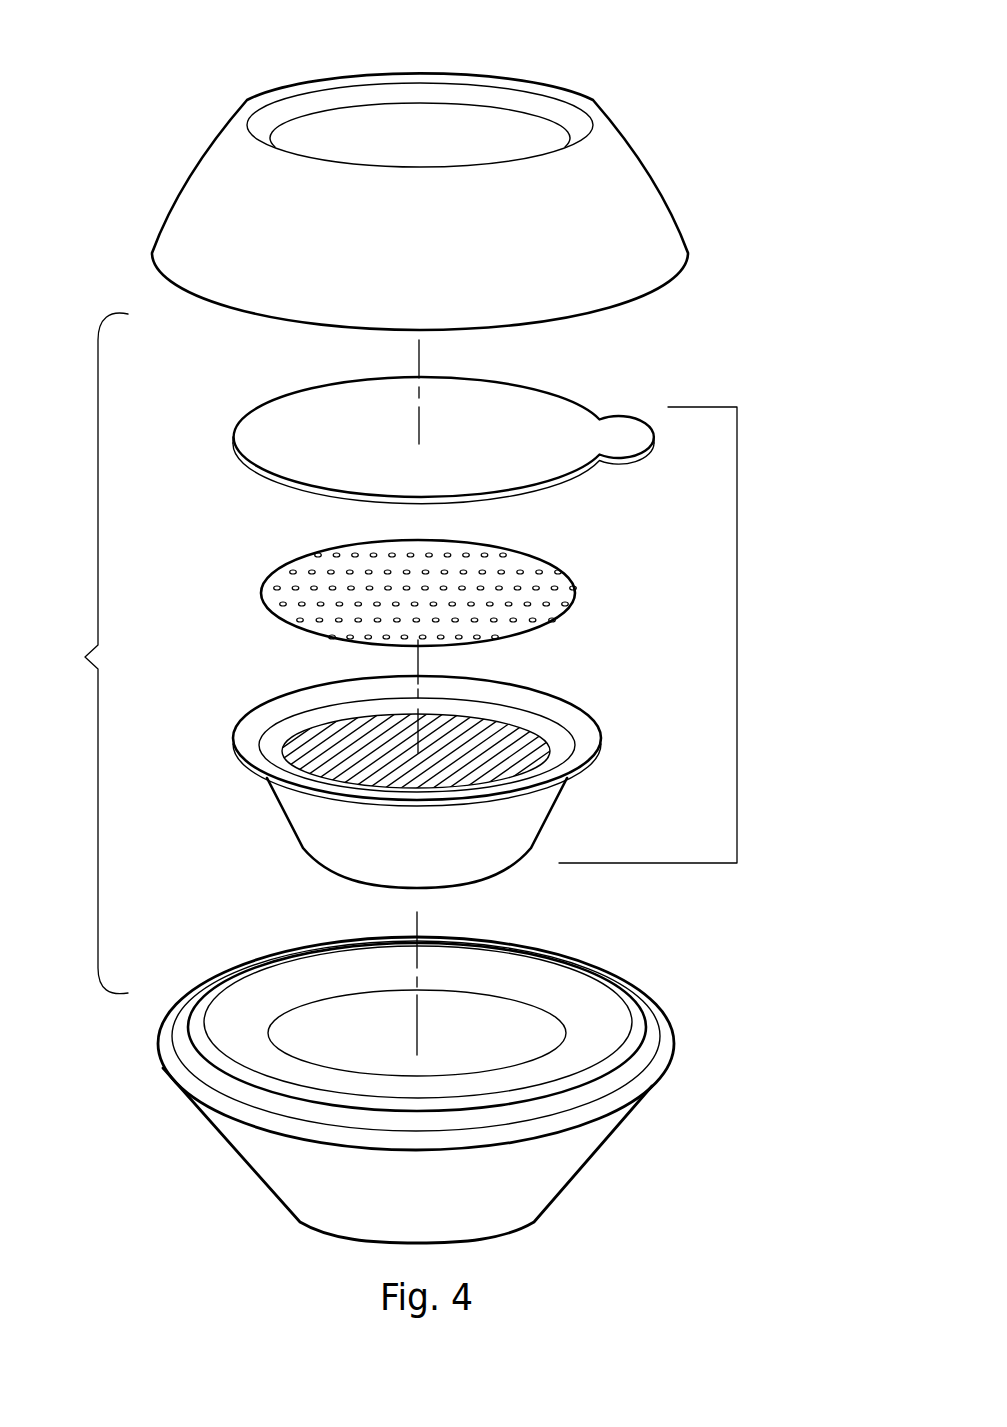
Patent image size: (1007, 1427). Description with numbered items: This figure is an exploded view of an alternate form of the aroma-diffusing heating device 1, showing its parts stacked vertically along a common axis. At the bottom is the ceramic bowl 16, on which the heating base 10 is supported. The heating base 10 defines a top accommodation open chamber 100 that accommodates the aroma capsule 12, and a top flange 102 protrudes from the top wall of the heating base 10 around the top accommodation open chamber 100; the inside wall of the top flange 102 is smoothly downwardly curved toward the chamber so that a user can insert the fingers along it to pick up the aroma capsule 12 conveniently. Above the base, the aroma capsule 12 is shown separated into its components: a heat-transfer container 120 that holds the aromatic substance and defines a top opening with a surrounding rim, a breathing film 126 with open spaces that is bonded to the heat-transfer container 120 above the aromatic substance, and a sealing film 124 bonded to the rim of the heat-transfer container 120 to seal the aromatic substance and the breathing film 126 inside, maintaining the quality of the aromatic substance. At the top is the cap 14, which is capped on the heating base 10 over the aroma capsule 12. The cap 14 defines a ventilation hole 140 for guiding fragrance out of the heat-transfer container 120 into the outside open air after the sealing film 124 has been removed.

The aroma-diffusing heating device 1 is at (89, 653).
The heating base 10 is at (642, 1070).
The top accommodation open chamber 100 is at (509, 1023).
The top flange 102 is at (293, 988).
The aroma capsule 12 is at (737, 637).
The heat-transfer container 120 is at (515, 830).
The sealing film 124 is at (547, 465).
The breathing film 126 is at (563, 600).
The cap 14 is at (617, 237).
The ventilation hole 140 is at (493, 130).
The ceramic bowl 16 is at (558, 1176).